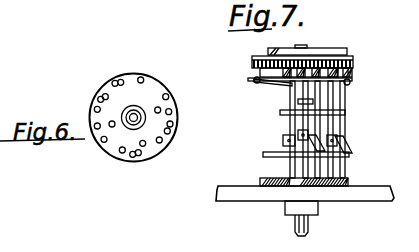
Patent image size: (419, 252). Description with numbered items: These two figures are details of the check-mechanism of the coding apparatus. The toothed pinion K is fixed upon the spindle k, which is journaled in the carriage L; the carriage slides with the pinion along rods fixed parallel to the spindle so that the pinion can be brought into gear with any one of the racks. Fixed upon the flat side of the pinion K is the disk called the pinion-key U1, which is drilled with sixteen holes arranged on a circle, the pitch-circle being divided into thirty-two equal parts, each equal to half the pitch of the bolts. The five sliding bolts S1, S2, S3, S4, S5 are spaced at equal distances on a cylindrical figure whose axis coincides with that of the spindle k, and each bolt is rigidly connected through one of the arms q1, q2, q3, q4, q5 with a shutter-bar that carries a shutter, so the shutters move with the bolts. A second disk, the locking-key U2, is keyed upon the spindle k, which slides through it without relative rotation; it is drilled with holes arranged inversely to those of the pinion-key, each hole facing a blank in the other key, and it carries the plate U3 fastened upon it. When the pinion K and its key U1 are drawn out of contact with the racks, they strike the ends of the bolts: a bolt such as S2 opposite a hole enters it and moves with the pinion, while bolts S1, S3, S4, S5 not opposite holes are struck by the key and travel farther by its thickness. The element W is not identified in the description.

In FIG. 6, the locking-key U2 is at (178, 127).
In FIG. 7, the locking-key U2 is at (262, 179).
In FIG. 7, the carriage L is at (256, 78).
In FIG. 7, the toothed pinion K is at (354, 60).
In FIG. 7, the pinion-key U1 is at (350, 80).
In FIG. 7, the frame bar W is at (330, 96).
In FIG. 7, the sliding bolt S2 is at (264, 84).
In FIG. 7, the sliding bolt S1 is at (302, 90).
In FIG. 7, the sliding bolt S3 is at (322, 99).
In FIG. 7, the sliding bolt S5 is at (281, 112).
In FIG. 7, the sliding bolt S4 is at (324, 140).
In FIG. 7, the arm q1 is at (283, 141).
In FIG. 7, the arm q2 is at (284, 136).
In FIG. 7, the arm q3 is at (337, 136).
In FIG. 7, the arm q4 is at (348, 144).
In FIG. 7, the arm q5 is at (350, 149).
In FIG. 7, the plate U3 is at (349, 182).
In FIG. 7, the spindle k is at (296, 220).